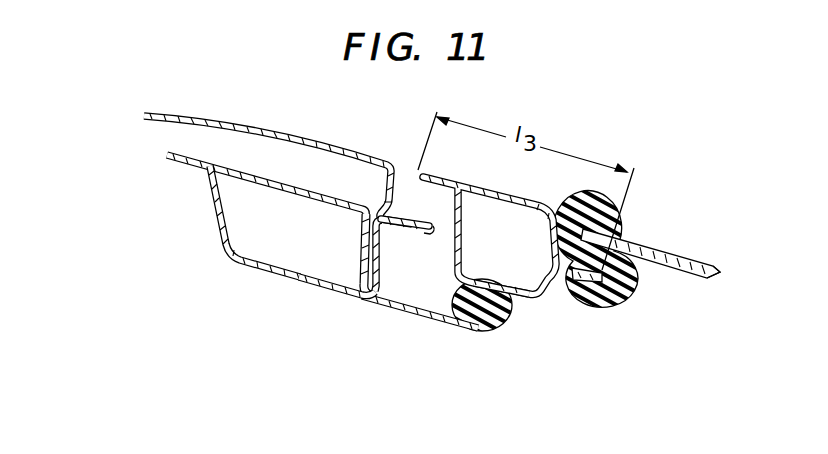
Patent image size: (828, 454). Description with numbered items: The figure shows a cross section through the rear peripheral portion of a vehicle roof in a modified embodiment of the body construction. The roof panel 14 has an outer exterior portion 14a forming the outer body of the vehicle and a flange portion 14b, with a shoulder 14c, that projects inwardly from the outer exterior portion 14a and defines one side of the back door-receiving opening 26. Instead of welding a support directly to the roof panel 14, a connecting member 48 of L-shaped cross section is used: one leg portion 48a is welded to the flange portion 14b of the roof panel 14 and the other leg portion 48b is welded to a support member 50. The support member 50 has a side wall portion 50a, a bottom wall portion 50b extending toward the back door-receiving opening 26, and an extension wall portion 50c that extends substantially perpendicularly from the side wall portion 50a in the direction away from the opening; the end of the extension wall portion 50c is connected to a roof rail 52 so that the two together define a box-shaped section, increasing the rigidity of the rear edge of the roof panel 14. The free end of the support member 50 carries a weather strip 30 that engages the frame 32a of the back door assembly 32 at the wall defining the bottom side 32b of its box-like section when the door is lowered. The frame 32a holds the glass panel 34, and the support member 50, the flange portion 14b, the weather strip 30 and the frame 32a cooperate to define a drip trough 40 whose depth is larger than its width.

The roof panel 14 is at (228, 122).
The outer exterior portion 14a is at (290, 136).
The flange portion 14b is at (388, 165).
The shoulder 14c is at (407, 212).
The back door-receiving opening 26 is at (691, 310).
The weather strip 30 is at (510, 313).
The back door assembly 32 is at (636, 226).
The frame 32a is at (482, 171).
The bottom side 32b is at (527, 298).
The glass panel 34 is at (687, 262).
The drip trough 40 is at (438, 287).
The connecting member 48 is at (373, 296).
The leg portion 48a is at (408, 231).
The leg portion 48b is at (357, 297).
The support member 50 is at (240, 165).
The side wall portion 50a is at (361, 250).
The bottom wall portion 50b is at (456, 330).
The extension wall portion 50c is at (297, 188).
The roof rail 52 is at (241, 264).